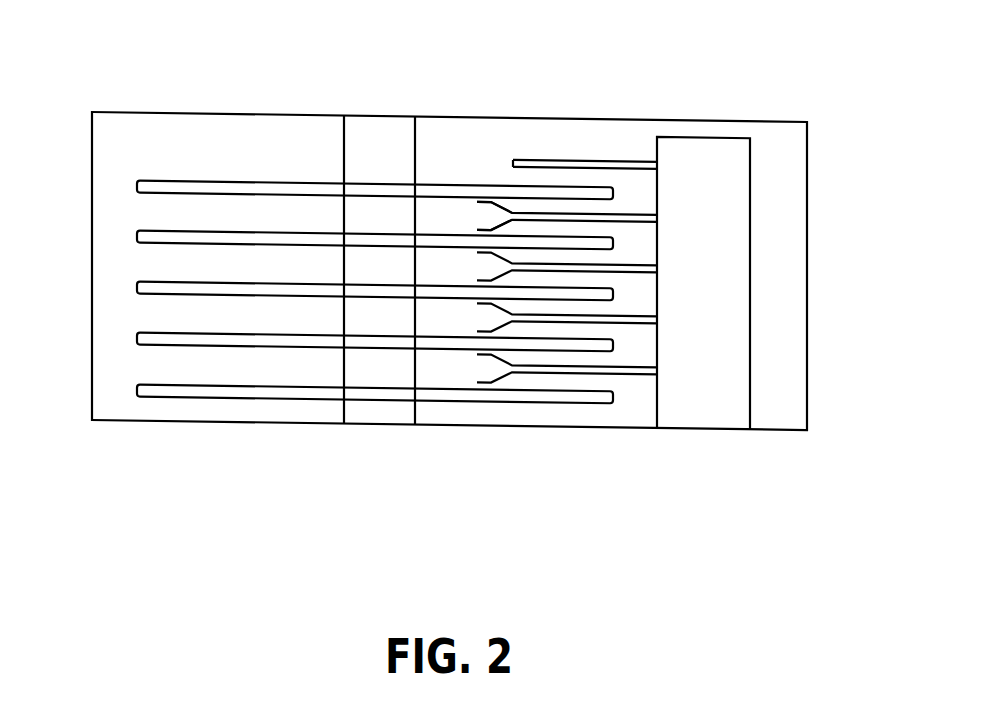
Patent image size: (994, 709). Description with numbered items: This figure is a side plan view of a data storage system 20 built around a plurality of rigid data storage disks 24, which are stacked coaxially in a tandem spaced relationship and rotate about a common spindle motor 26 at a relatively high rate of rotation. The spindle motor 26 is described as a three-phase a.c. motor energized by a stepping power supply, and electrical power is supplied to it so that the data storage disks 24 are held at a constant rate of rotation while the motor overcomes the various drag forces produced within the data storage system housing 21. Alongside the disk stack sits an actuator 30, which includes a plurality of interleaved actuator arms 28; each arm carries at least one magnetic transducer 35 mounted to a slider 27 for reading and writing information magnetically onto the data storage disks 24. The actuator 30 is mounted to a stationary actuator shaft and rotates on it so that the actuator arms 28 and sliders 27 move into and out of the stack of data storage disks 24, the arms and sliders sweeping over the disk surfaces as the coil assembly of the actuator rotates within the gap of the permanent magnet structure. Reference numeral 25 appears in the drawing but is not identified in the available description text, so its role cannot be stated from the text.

The data storage system 20 is at (444, 254).
The data storage system housing 21 is at (808, 316).
The data storage disks 24 is at (137, 186).
The ink channel inlet end 25 is at (513, 167).
The spindle motor 26 is at (374, 411).
The slider 27 is at (510, 174).
The actuator arms 28 is at (567, 159).
The actuator 30 is at (700, 402).
The magnetic transducer 35 is at (484, 187).